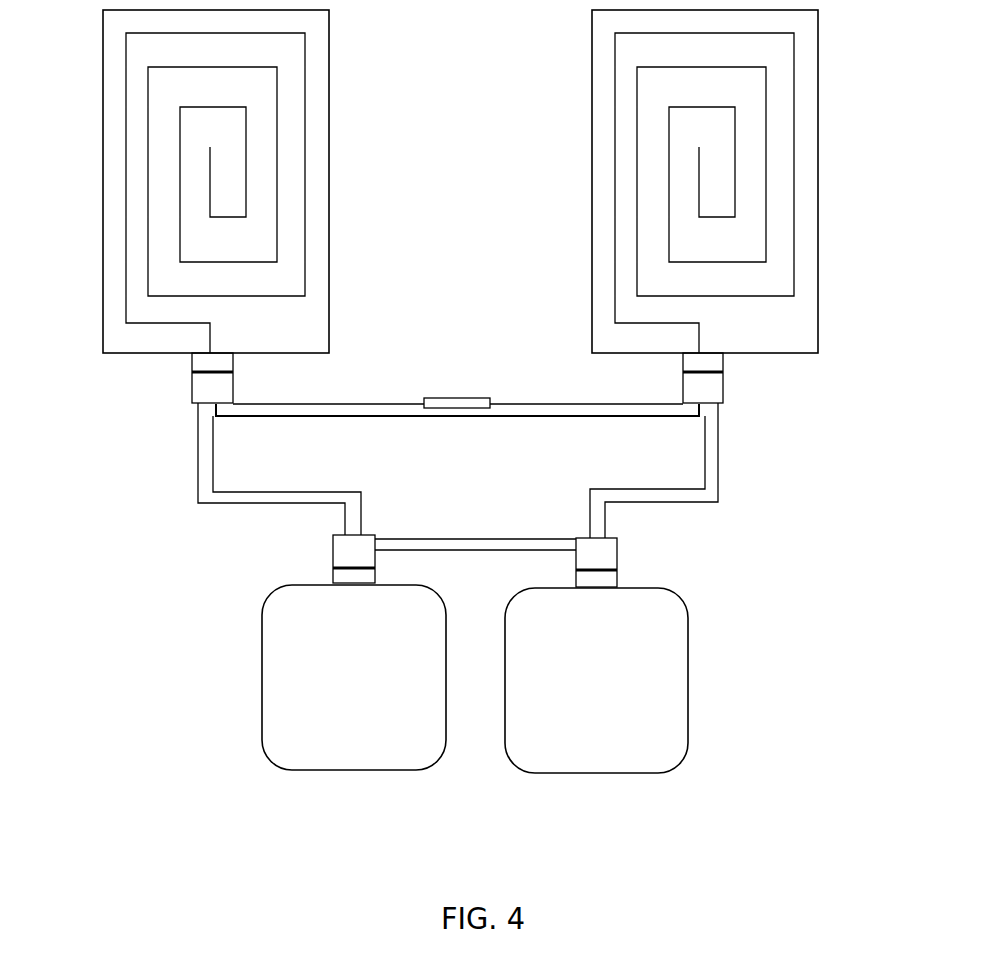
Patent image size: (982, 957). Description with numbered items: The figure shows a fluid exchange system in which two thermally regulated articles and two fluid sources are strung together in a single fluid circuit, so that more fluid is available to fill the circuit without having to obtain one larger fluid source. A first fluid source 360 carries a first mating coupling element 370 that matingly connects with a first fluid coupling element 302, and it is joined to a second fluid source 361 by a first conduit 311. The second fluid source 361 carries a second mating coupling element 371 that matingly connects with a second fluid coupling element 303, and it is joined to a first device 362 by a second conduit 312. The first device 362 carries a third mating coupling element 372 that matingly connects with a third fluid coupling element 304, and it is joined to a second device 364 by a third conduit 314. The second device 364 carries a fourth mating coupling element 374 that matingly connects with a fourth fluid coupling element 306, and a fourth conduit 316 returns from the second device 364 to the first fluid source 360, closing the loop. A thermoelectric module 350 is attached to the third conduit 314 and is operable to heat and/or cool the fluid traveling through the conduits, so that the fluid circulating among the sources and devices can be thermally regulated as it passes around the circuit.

The first fluid coupling element 302 is at (333, 550).
The second fluid coupling element 303 is at (618, 558).
The third fluid coupling element 304 is at (723, 388).
The fourth fluid coupling element 306 is at (192, 388).
The first conduit 311 is at (467, 539).
The second conduit 312 is at (718, 497).
The third conduit 314 is at (518, 404).
The fourth conduit 316 is at (198, 467).
The thermoelectric module 350 is at (440, 398).
The first fluid source 360 is at (262, 700).
The second fluid source 361 is at (685, 752).
The first device 362 is at (592, 147).
The second device 364 is at (329, 135).
The first mating coupling element 370 is at (375, 576).
The second mating coupling element 371 is at (617, 578).
The third mating coupling element 372 is at (683, 358).
The fourth mating coupling element 374 is at (233, 357).